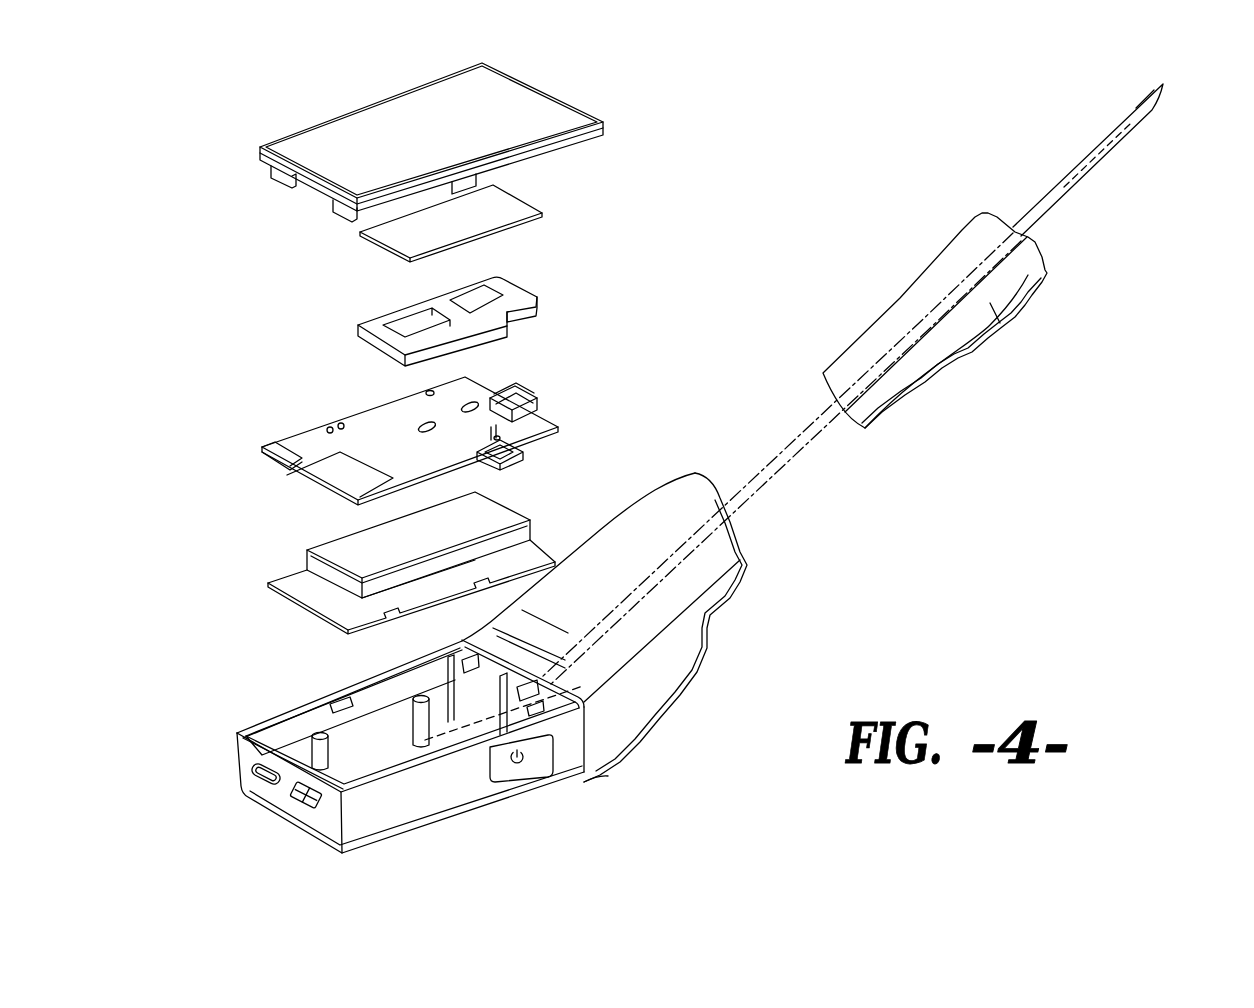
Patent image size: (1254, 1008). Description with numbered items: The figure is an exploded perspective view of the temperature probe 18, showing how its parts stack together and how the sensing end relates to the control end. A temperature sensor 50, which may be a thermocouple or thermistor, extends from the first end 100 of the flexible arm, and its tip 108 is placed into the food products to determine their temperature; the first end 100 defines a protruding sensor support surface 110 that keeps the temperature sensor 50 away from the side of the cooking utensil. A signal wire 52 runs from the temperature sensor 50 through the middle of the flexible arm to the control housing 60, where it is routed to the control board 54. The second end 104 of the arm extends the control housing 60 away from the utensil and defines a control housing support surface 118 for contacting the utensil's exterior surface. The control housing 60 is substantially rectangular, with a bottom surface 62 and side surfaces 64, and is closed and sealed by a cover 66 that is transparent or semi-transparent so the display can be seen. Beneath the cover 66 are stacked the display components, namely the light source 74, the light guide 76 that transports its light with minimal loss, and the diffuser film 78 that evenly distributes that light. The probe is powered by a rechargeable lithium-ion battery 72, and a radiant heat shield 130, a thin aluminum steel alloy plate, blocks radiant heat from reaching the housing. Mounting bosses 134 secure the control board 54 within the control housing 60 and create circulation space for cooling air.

The temperature probe 18 is at (1075, 458).
The temperature sensor 50 is at (1133, 152).
The signal wire 52 is at (783, 463).
The control board 54 is at (305, 447).
The control housing 60 is at (389, 755).
The bottom surface 62 is at (393, 753).
The side surfaces 64 is at (300, 730).
The cover 66 is at (540, 110).
The battery 72 is at (335, 550).
The light source 74 is at (513, 393).
The light guide 76 is at (515, 300).
The diffuser film 78 is at (517, 213).
The first end 100 is at (973, 288).
The second end 104 is at (670, 729).
The tip 108 is at (1163, 101).
The sensor support surface 110 is at (1019, 321).
The control housing support surface 118 is at (592, 782).
The radiant heat shield 130 is at (293, 585).
The mounting bosses 134 is at (290, 739).